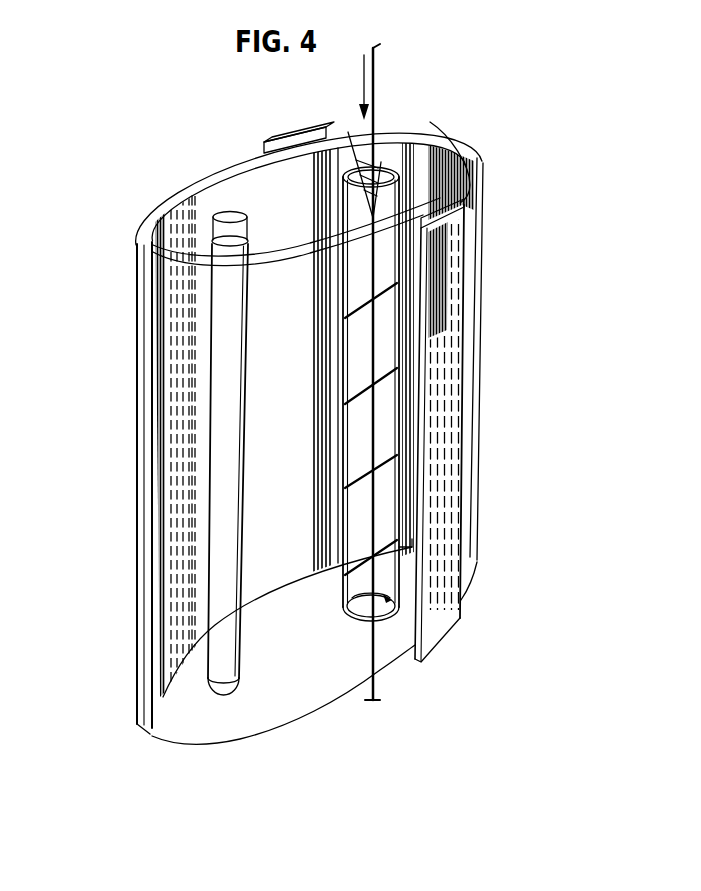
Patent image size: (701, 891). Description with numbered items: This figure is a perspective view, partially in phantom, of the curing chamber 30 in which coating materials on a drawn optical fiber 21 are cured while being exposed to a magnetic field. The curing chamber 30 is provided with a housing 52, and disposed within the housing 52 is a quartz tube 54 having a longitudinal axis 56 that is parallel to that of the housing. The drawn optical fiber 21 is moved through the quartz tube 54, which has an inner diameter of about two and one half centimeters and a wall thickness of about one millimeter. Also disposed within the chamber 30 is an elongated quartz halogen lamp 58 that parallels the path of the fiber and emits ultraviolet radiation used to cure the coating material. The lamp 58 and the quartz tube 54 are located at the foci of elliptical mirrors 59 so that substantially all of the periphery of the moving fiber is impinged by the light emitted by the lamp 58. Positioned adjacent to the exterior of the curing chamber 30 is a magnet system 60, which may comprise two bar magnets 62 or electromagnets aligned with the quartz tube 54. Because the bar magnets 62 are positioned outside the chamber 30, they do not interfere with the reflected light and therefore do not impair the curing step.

The drawn optical fiber 21 is at (378, 76).
The curing chamber 30 is at (136, 411).
The housing 52 is at (244, 180).
The quartz tube 54 is at (347, 283).
The longitudinal axis 56 is at (348, 132).
The quartz halogen lamp 58 is at (230, 447).
The elliptical mirrors 59 is at (170, 210).
The magnet system 60 is at (273, 137).
The bar magnets 62 is at (456, 232).